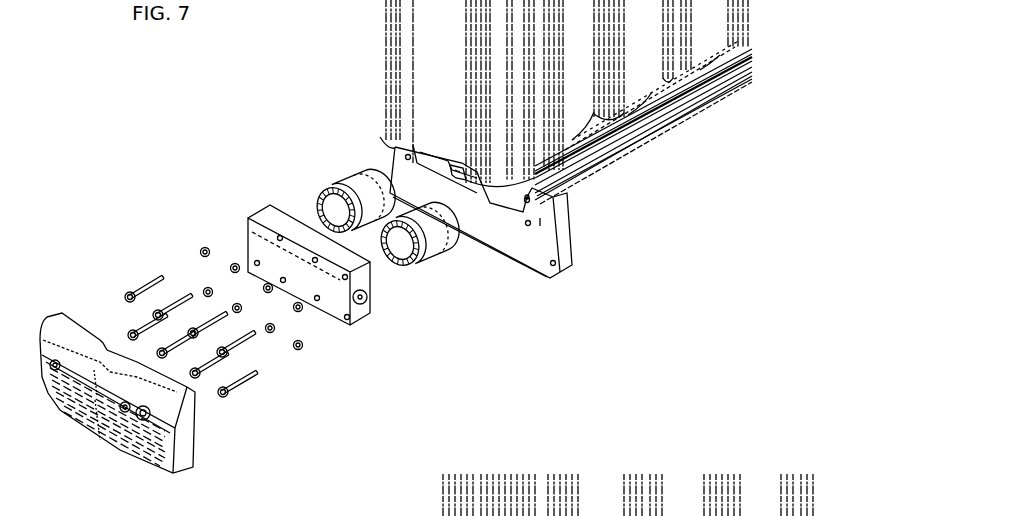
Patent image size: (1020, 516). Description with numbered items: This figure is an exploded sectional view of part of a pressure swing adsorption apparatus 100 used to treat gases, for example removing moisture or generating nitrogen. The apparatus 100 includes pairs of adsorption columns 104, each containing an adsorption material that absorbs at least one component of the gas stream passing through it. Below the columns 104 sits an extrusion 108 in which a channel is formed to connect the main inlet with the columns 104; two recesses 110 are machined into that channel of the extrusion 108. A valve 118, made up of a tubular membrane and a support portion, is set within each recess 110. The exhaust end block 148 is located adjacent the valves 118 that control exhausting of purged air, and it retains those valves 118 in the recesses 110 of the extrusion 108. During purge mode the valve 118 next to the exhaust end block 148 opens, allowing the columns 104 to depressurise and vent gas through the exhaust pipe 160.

The pressure swing adsorption apparatus 100 is at (172, 87).
The adsorption column 104 is at (643, 68).
The extrusion 108 is at (612, 153).
The recess 110 is at (427, 150).
The valve 118 is at (350, 180).
The exhaust end block 148 is at (257, 240).
The exhaust pipe 160 is at (460, 177).